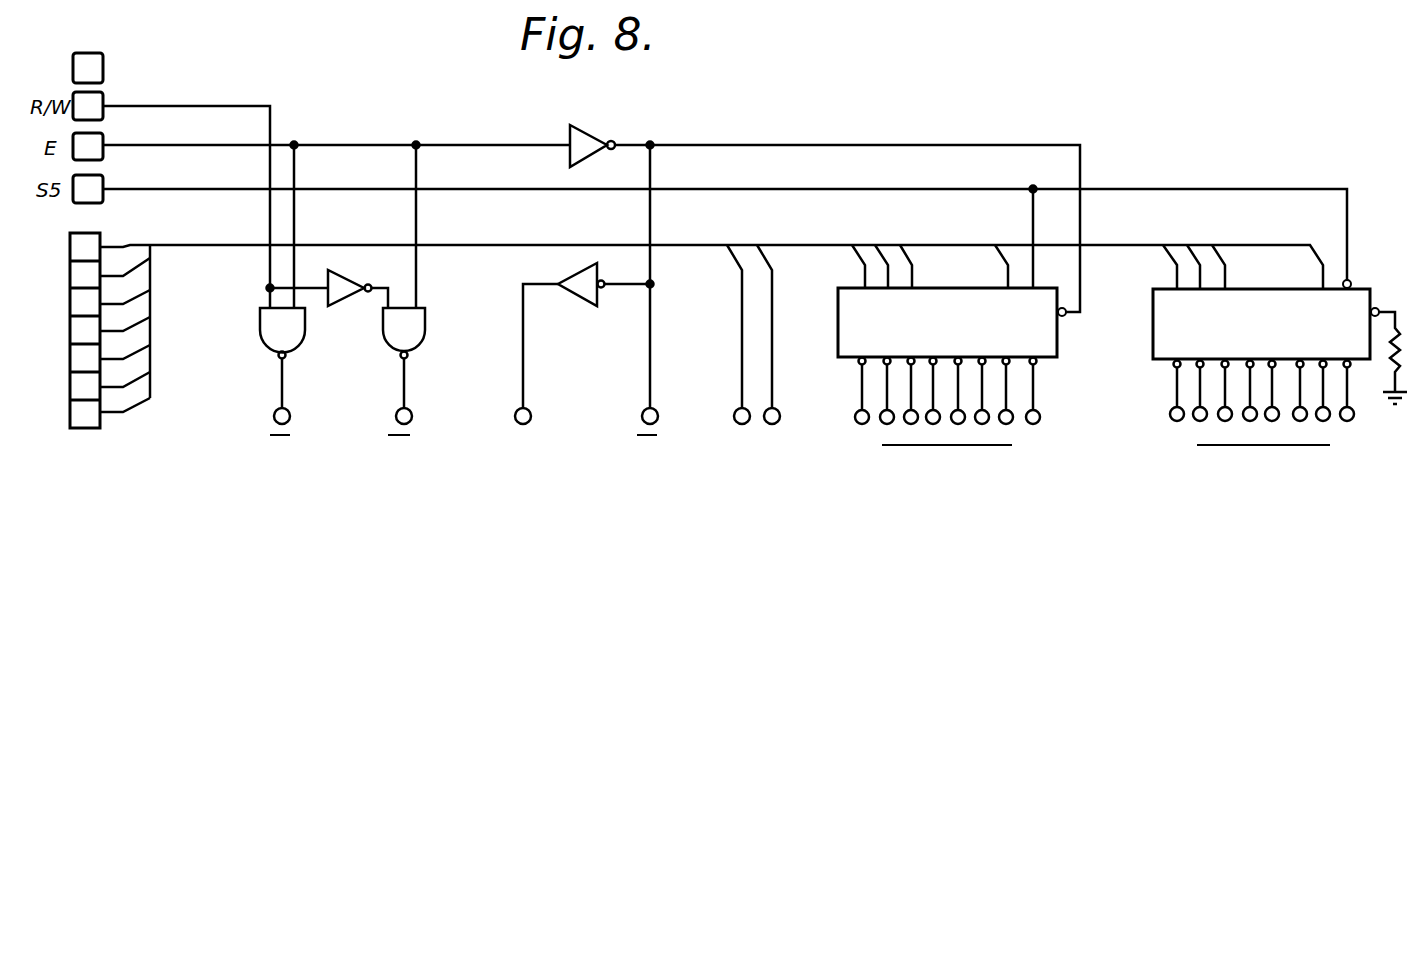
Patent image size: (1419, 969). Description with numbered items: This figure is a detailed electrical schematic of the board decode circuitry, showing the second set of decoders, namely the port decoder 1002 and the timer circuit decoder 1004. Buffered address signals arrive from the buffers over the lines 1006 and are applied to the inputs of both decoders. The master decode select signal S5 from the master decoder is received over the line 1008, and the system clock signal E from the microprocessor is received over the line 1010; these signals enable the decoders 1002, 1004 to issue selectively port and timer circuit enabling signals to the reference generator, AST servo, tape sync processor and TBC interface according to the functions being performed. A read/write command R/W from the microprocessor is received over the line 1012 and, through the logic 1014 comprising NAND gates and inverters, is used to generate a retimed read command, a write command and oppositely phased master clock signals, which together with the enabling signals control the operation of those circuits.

The port decoder 1002 is at (1057, 355).
The timer circuit decoder 1004 is at (1153, 330).
The lines 1006 is at (147, 405).
The line 1008 is at (236, 162).
The line 1010 is at (392, 114).
The line 1012 is at (246, 72).
The logic 1014 is at (486, 438).